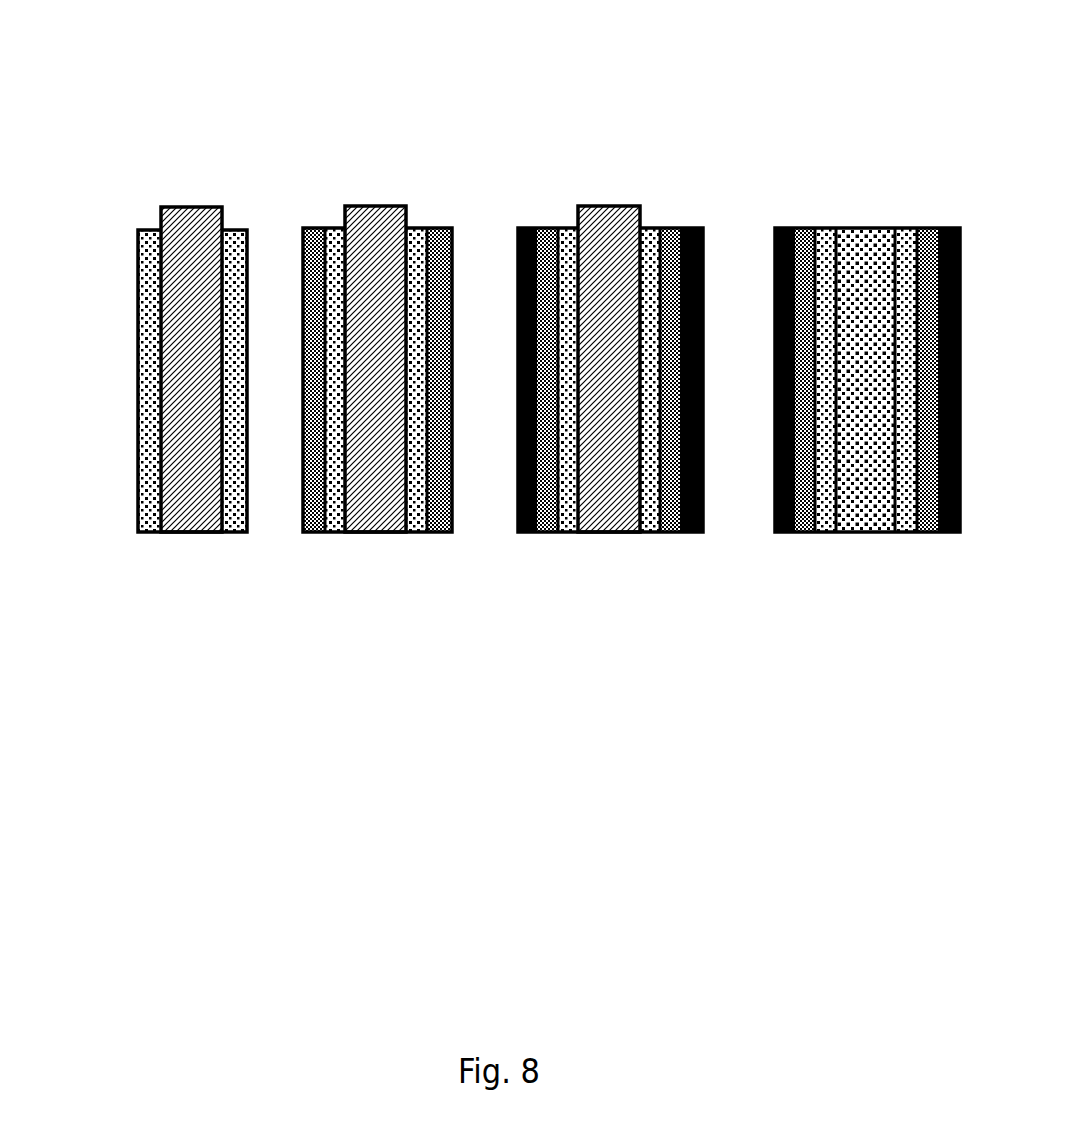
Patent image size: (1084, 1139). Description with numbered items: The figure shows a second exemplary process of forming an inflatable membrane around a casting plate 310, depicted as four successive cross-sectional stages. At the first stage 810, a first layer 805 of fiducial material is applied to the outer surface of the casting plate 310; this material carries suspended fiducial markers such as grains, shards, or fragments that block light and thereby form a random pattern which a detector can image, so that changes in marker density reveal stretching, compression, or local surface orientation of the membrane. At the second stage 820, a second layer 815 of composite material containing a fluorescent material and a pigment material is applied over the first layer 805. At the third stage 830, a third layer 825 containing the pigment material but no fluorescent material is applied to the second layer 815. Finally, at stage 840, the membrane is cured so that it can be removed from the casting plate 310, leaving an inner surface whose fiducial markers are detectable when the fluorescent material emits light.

The casting plate 310 is at (190, 207).
The first layer 805 is at (152, 230).
The step of applying first layer 810 is at (146, 342).
The second layer 815 is at (438, 228).
The step of applying second layer 820 is at (338, 388).
The third layer 825 is at (688, 228).
The step of applying third layer 830 is at (564, 385).
The step of curing membrane 840 is at (861, 586).